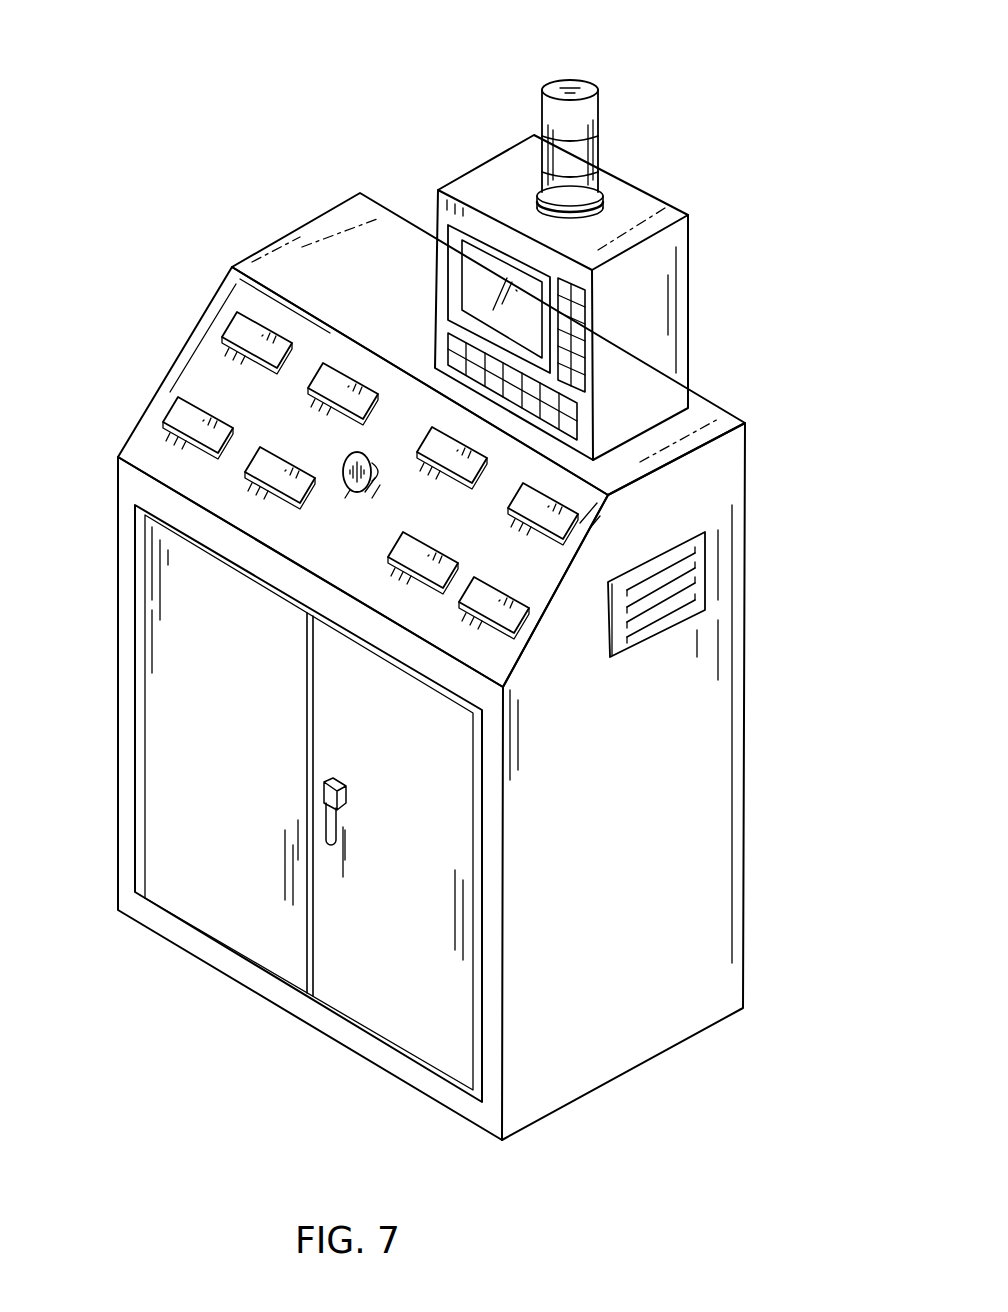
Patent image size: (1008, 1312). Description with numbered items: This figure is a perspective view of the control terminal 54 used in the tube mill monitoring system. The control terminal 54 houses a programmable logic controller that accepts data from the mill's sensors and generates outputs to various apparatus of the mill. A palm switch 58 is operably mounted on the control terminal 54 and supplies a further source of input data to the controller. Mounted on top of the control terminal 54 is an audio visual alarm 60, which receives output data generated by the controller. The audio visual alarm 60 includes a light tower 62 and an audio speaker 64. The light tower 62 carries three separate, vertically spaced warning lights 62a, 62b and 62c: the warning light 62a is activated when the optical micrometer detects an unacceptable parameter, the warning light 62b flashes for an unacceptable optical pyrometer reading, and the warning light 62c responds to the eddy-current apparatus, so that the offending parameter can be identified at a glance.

The control terminal 54 is at (692, 795).
The palm switch 58 is at (348, 484).
The audio visual alarm 60 is at (778, 193).
The light tower 62 is at (598, 147).
The warning light 62a is at (540, 108).
The warning light 62b is at (537, 150).
The warning light 62c is at (528, 180).
The audio speaker 64 is at (707, 582).